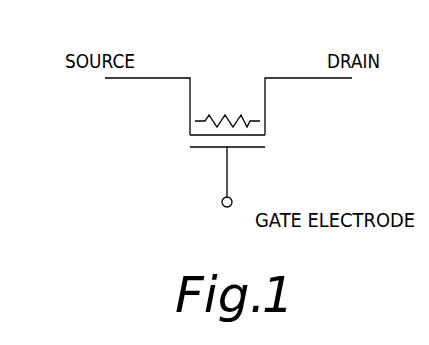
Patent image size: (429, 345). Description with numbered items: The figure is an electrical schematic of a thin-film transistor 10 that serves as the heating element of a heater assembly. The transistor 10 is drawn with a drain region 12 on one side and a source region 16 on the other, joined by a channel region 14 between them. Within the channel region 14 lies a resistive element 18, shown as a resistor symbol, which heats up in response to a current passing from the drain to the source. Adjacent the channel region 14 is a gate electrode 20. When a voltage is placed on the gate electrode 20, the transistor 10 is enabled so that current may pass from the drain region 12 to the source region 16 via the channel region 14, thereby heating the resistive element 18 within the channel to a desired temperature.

The thin-film transistor 10 is at (163, 114).
The drain region 12 is at (308, 78).
The channel region 14 is at (248, 135).
The source region 16 is at (168, 78).
The resistive element 18 is at (225, 115).
The gate electrode 20 is at (208, 148).